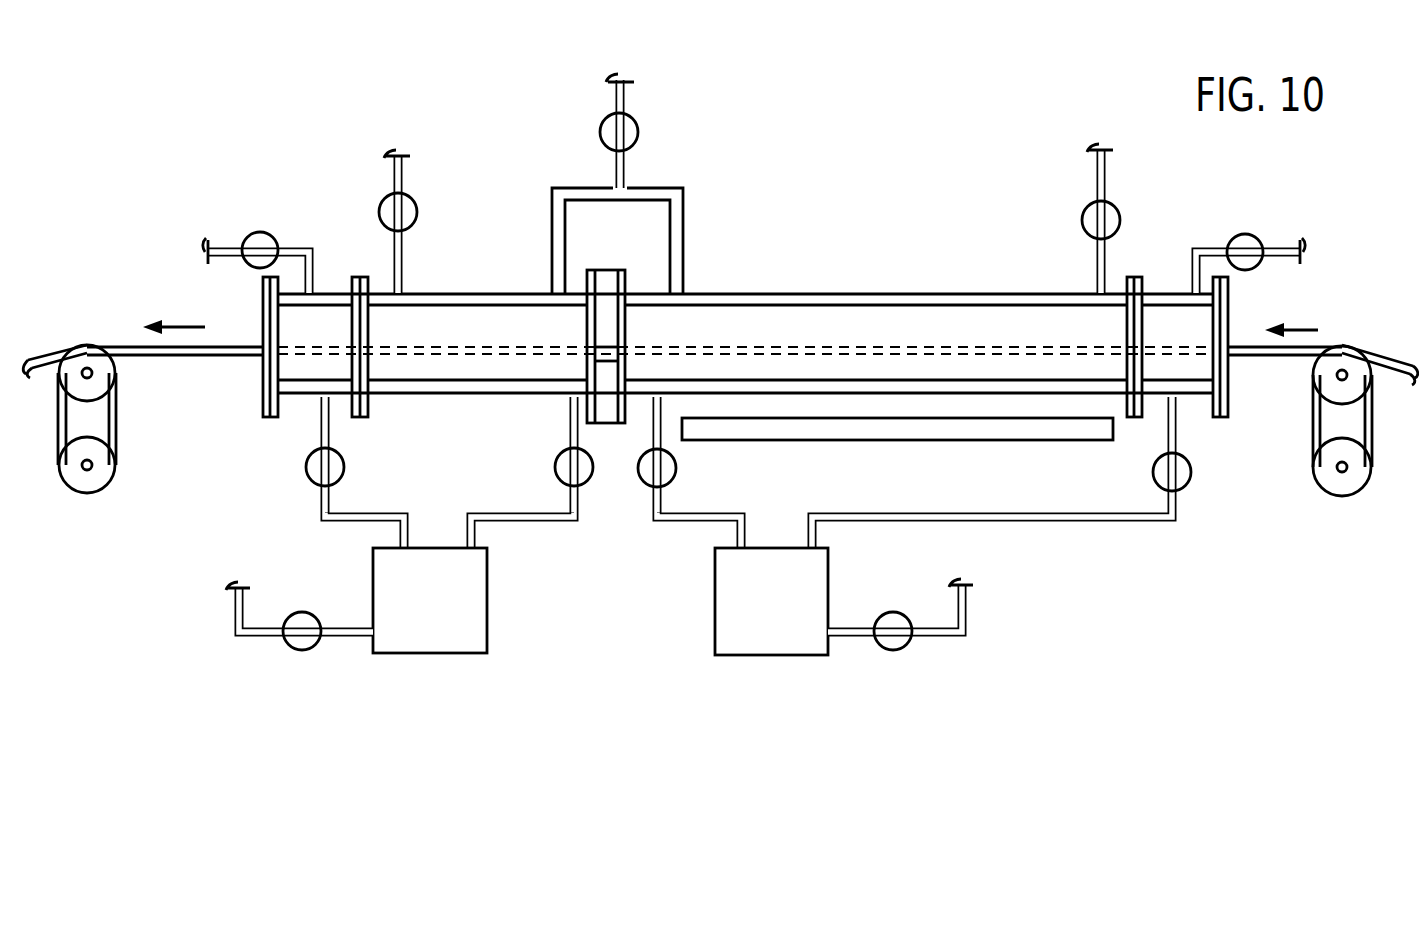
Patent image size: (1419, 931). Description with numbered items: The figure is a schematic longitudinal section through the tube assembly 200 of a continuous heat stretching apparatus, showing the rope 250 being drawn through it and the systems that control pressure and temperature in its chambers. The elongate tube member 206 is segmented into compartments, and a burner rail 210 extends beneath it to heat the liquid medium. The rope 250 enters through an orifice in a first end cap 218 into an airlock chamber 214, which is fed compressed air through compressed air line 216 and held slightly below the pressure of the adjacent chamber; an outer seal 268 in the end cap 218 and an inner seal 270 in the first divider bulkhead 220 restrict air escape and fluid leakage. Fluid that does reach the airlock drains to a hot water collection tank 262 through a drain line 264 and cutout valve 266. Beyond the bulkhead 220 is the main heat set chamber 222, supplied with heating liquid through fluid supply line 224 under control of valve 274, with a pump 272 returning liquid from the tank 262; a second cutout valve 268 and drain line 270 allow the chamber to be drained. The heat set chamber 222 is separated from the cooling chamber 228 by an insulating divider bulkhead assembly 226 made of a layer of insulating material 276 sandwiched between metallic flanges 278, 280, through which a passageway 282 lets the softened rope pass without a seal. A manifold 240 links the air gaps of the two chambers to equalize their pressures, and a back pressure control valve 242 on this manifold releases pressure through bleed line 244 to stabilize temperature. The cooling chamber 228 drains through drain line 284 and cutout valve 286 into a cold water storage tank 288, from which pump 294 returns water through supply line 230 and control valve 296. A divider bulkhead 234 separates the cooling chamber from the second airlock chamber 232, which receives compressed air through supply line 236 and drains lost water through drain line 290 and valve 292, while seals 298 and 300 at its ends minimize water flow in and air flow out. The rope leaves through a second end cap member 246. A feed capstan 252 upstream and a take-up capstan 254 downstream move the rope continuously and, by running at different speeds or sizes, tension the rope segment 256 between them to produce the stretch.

The tube assembly 200 is at (838, 210).
The elongate tube member 206 is at (1252, 240).
The burner rail 210 is at (880, 432).
The airlock chamber 214 is at (1178, 312).
The compressed air line 216 is at (1288, 247).
The first end cap 218 is at (1230, 300).
The first divider bulkhead 220 is at (1130, 277).
The main heat set chamber 222 is at (833, 317).
The fluid supply line 224 is at (1095, 180).
The insulating divider bulkhead assembly 226 is at (578, 325).
The cooling chamber 228 is at (455, 375).
The cooling line 230 is at (392, 166).
The second airlock chamber 232 is at (287, 323).
The divider bulkhead 234 is at (357, 275).
The supply line 236 is at (222, 248).
The manifold 240 is at (677, 223).
The back pressure control valve 242 is at (600, 130).
The bleed line 244 is at (614, 90).
The second end cap member 246 is at (263, 373).
The rope 250 is at (118, 347).
The feed capstan 252 is at (1325, 488).
The take-up capstan 254 is at (107, 475).
The rope segment 256 is at (850, 343).
The hot water collection tank 262 is at (720, 592).
The drain line 264 is at (1020, 522).
The cutout valve 266 is at (1191, 472).
The outer seal 268 is at (1232, 363).
The inner seal 270 is at (1130, 335).
The pump 272 is at (895, 612).
The valve 274 is at (1082, 220).
The layer of insulating material 276 is at (612, 270).
The metallic flange 278 is at (580, 293).
The metallic flange 280 is at (640, 317).
The passageway 282 is at (600, 330).
The drain line 284 is at (527, 522).
The cutout valve 286 is at (554, 467).
The cold water storage tank 288 is at (477, 610).
The drain line 290 is at (355, 522).
The valve 292 is at (304, 465).
The pump 294 is at (313, 574).
The control valve 296 is at (380, 212).
The seal 298 is at (388, 372).
The seal 300 is at (263, 337).